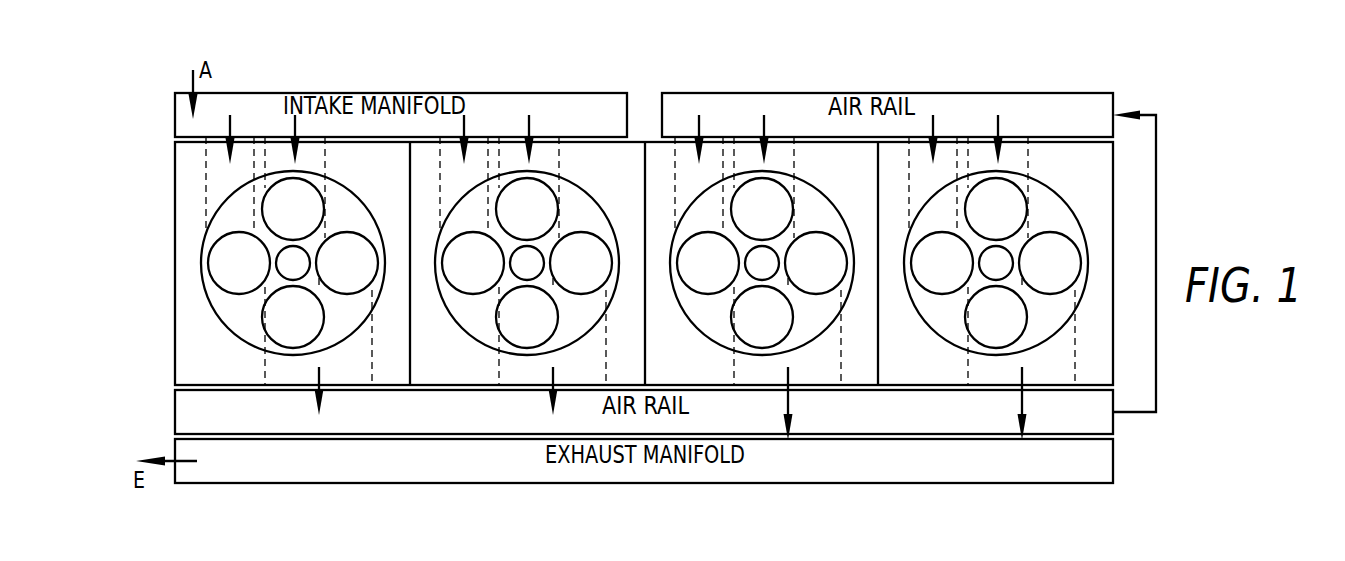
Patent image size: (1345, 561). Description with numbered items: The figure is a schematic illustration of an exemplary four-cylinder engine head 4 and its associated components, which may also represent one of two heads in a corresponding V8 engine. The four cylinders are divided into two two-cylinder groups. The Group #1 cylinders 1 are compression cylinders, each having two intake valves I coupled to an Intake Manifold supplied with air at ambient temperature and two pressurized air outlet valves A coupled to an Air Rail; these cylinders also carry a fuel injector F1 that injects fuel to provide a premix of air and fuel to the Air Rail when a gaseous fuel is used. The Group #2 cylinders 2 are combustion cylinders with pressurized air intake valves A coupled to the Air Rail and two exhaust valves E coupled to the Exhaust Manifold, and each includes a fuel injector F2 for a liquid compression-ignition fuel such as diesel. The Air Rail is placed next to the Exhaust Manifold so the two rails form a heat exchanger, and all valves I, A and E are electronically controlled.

The 4-cylinder head 4 is at (644, 215).
The Group #1 compression cylinders 1 is at (416, 265).
The Group #2 combustion cylinders 2 is at (885, 277).
The fuel injector F1 is at (410, 264).
The fuel injector F2 is at (879, 264).